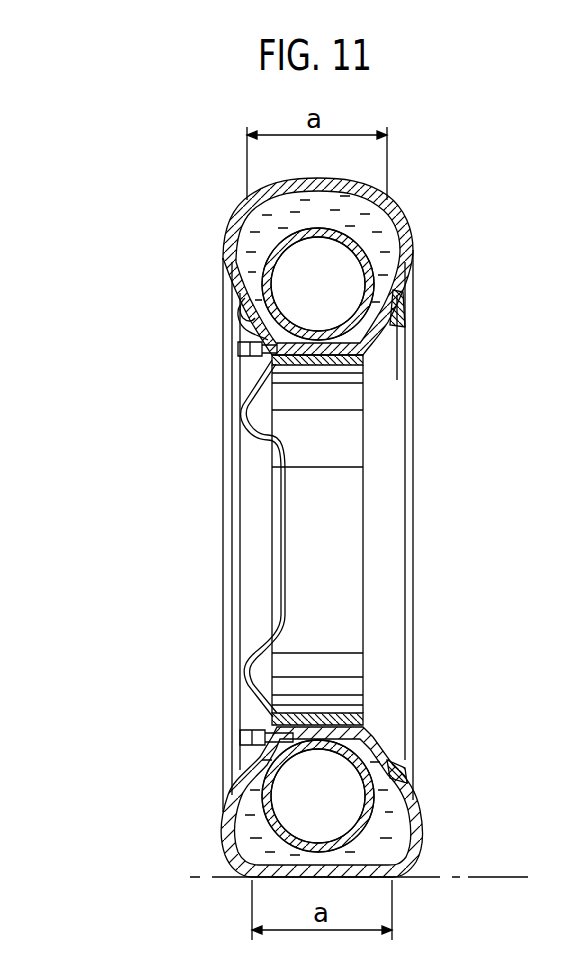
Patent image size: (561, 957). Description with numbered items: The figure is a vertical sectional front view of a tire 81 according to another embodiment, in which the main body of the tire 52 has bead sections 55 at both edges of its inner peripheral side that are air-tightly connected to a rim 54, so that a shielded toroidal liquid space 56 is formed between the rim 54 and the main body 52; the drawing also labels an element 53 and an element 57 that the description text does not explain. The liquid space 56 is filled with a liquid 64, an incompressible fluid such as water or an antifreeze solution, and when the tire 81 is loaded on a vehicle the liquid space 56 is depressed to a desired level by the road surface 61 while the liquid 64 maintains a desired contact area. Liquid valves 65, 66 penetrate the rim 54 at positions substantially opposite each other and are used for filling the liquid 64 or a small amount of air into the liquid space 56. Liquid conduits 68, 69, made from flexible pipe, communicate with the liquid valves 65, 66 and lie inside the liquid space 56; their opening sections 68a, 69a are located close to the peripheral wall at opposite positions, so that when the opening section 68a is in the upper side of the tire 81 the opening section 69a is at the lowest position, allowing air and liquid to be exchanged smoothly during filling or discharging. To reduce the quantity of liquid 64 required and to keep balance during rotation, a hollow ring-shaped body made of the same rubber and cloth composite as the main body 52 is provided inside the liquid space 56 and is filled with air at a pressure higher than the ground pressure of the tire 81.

The tire 81 is at (403, 203).
The liquid conduit 68 is at (413, 248).
The opening section 68a is at (312, 197).
The liquid 64 is at (407, 232).
The tread portion 53 is at (350, 190).
The main body of the tire 52 is at (311, 247).
The liquid space 56 is at (243, 233).
The rim 54 is at (247, 300).
The bead section 55 is at (240, 310).
The liquid valve 65 is at (240, 353).
The diaphragm 57 is at (273, 437).
The liquid valve 66 is at (250, 733).
The liquid conduit 69 is at (423, 820).
The opening section 69a is at (323, 853).
The road surface 61 is at (468, 877).